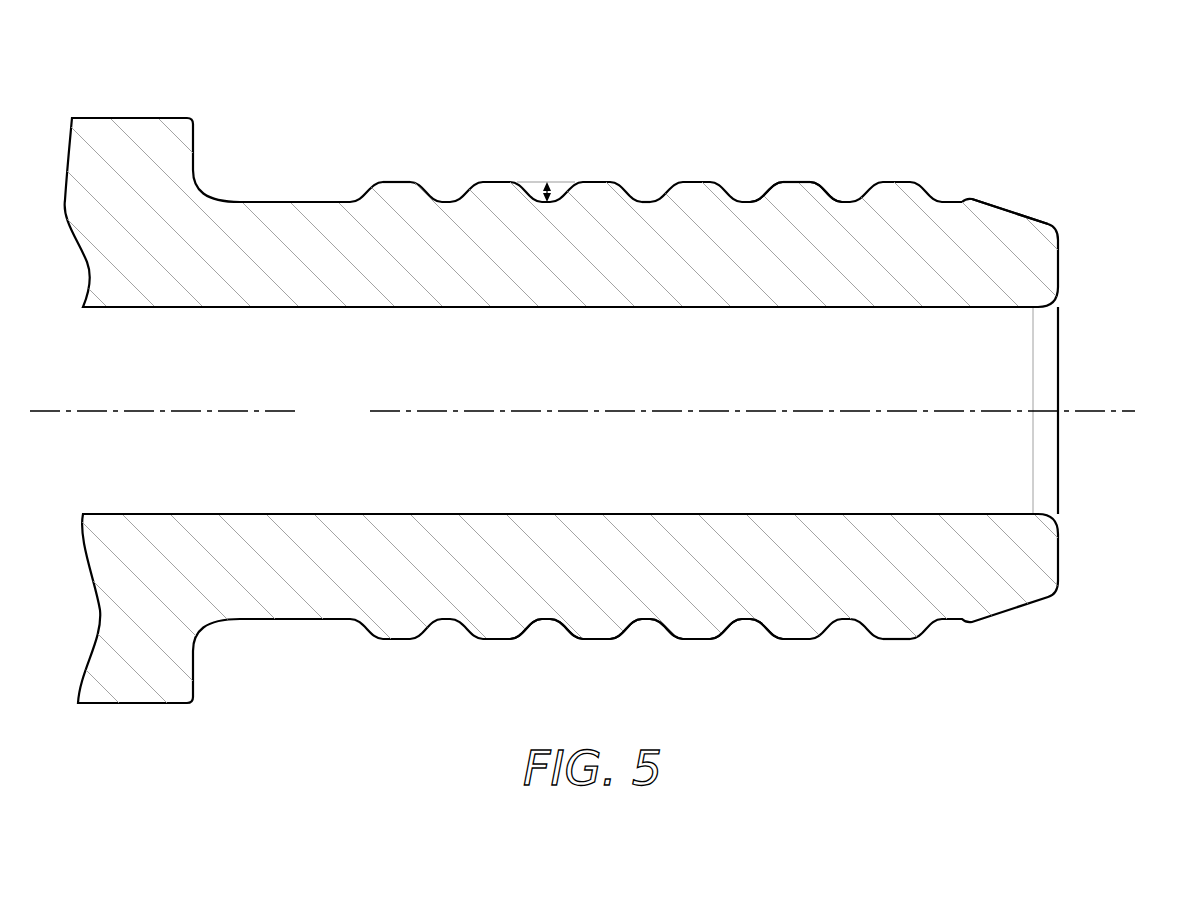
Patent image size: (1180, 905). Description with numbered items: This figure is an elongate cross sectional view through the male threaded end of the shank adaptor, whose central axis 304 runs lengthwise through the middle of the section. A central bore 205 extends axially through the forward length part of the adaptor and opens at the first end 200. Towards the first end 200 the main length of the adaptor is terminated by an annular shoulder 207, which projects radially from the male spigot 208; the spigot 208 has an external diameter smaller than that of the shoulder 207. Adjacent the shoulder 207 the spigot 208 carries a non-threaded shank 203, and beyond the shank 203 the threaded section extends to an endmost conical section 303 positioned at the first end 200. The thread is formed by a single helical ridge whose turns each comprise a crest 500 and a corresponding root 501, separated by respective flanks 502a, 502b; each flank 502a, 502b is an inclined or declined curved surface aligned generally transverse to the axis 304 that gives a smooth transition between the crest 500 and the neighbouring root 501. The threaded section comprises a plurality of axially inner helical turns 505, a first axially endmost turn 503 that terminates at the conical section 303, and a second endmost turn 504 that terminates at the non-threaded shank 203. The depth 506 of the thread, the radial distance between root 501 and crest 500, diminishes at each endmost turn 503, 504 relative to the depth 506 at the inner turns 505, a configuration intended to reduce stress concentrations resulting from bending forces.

The first end 200 is at (1058, 252).
The non-threaded shank 203 is at (302, 202).
The central bore 205 is at (358, 422).
The annular shoulder 207 is at (140, 118).
The male spigot 208 is at (613, 568).
The conical section 303 is at (1030, 218).
The central axis 304 is at (1110, 411).
The crest 500 is at (797, 182).
The root 501 is at (647, 202).
The flank 502a is at (772, 193).
The flank 502b is at (827, 193).
The first axially endmost turn 503 is at (903, 649).
The second endmost turn 504 is at (390, 179).
The axially inner helical turns 505 is at (813, 658).
The depth 506 is at (545, 180).